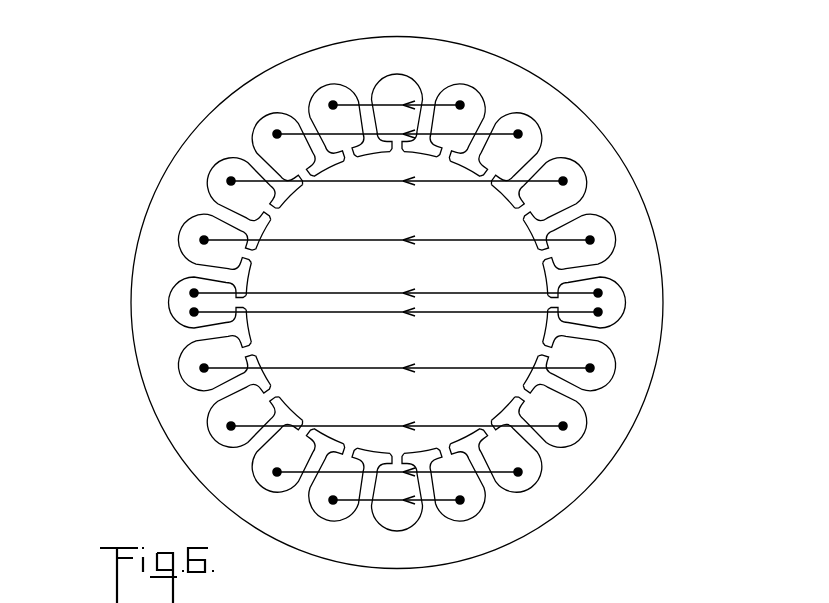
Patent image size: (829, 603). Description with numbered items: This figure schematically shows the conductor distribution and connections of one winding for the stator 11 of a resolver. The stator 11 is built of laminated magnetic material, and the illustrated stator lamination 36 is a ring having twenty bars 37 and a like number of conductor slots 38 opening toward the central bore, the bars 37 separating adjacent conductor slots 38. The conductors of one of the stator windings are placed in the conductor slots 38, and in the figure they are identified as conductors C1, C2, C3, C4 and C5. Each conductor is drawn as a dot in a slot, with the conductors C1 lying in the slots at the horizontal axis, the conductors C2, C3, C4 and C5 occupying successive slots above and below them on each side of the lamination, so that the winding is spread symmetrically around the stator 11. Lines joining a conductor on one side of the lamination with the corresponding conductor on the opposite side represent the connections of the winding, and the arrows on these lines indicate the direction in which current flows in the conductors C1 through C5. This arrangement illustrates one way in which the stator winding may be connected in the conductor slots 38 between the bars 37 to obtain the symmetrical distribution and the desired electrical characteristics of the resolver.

The stator 11 is at (245, 77).
The stator lamination 36 is at (515, 67).
The bar 37 is at (528, 226).
The conductor slot 38 is at (393, 83).
The conductor C1 is at (194, 293).
The conductor C2 is at (204, 240).
The conductor C3 is at (231, 181).
The conductor C4 is at (277, 134).
The conductor C5 is at (333, 105).